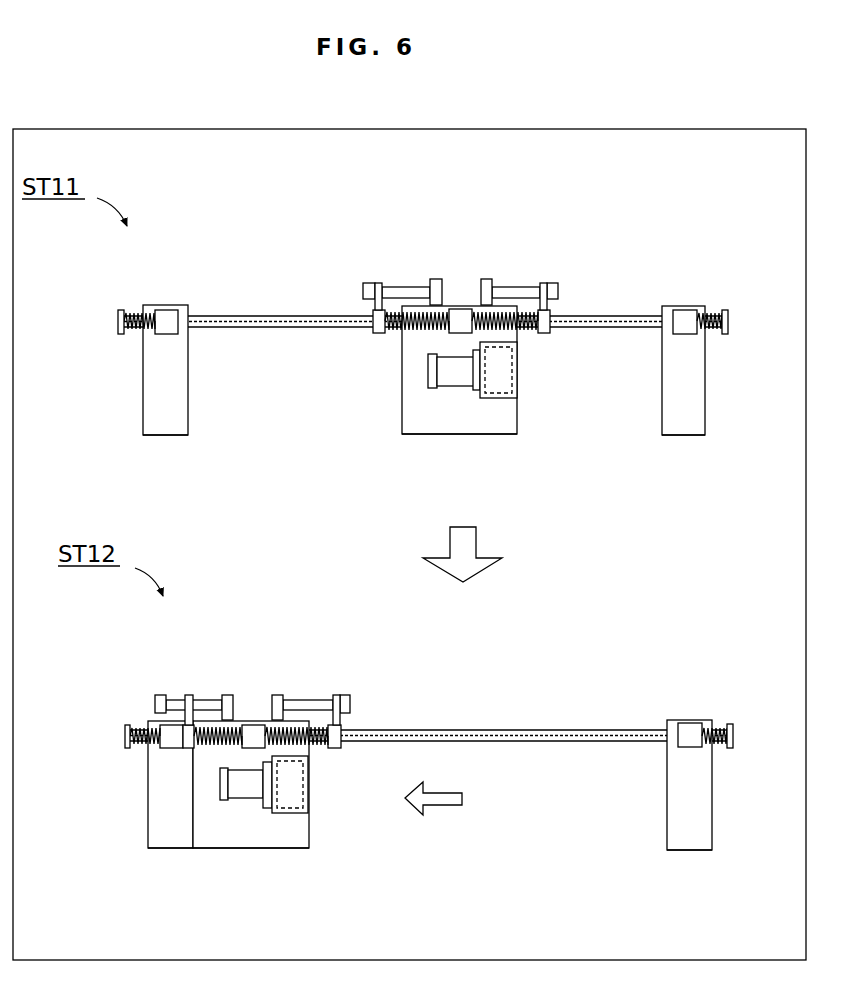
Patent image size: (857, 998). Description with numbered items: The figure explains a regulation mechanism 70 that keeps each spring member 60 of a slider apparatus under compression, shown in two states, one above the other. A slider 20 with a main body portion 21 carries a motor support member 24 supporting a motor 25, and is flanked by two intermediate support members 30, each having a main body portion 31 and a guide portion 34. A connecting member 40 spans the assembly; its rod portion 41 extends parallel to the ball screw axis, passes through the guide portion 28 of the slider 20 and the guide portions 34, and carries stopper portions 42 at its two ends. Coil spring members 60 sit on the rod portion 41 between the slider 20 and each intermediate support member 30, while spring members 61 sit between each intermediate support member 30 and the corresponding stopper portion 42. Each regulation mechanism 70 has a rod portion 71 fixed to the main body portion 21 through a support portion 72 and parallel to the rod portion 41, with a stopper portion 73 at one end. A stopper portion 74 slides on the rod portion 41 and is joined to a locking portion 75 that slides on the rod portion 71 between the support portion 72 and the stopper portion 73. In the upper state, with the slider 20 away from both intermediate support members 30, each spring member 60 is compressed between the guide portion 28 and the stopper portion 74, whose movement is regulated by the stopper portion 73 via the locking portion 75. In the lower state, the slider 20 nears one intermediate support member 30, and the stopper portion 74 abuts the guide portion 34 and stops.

The slider 20 is at (418, 456).
The main body portion 21 is at (403, 405).
The motor support member 24 is at (502, 400).
The motor 25 is at (455, 390).
The guide portion 28 is at (458, 308).
The intermediate support member 30 is at (186, 456).
The main body portion 31 is at (162, 437).
The guide portion 34 is at (165, 311).
The connecting member 40 is at (293, 300).
The rod portion 41 is at (628, 330).
The stopper portion 42 is at (117, 322).
The spring member 60 is at (402, 334).
The spring member 61 is at (130, 314).
The regulation mechanism 70 is at (333, 260).
The rod portion 71 is at (388, 287).
The support portion 72 is at (435, 279).
The stopper portion 73 is at (364, 283).
The stopper portion 74 is at (374, 333).
The locking portion 75 is at (374, 304).